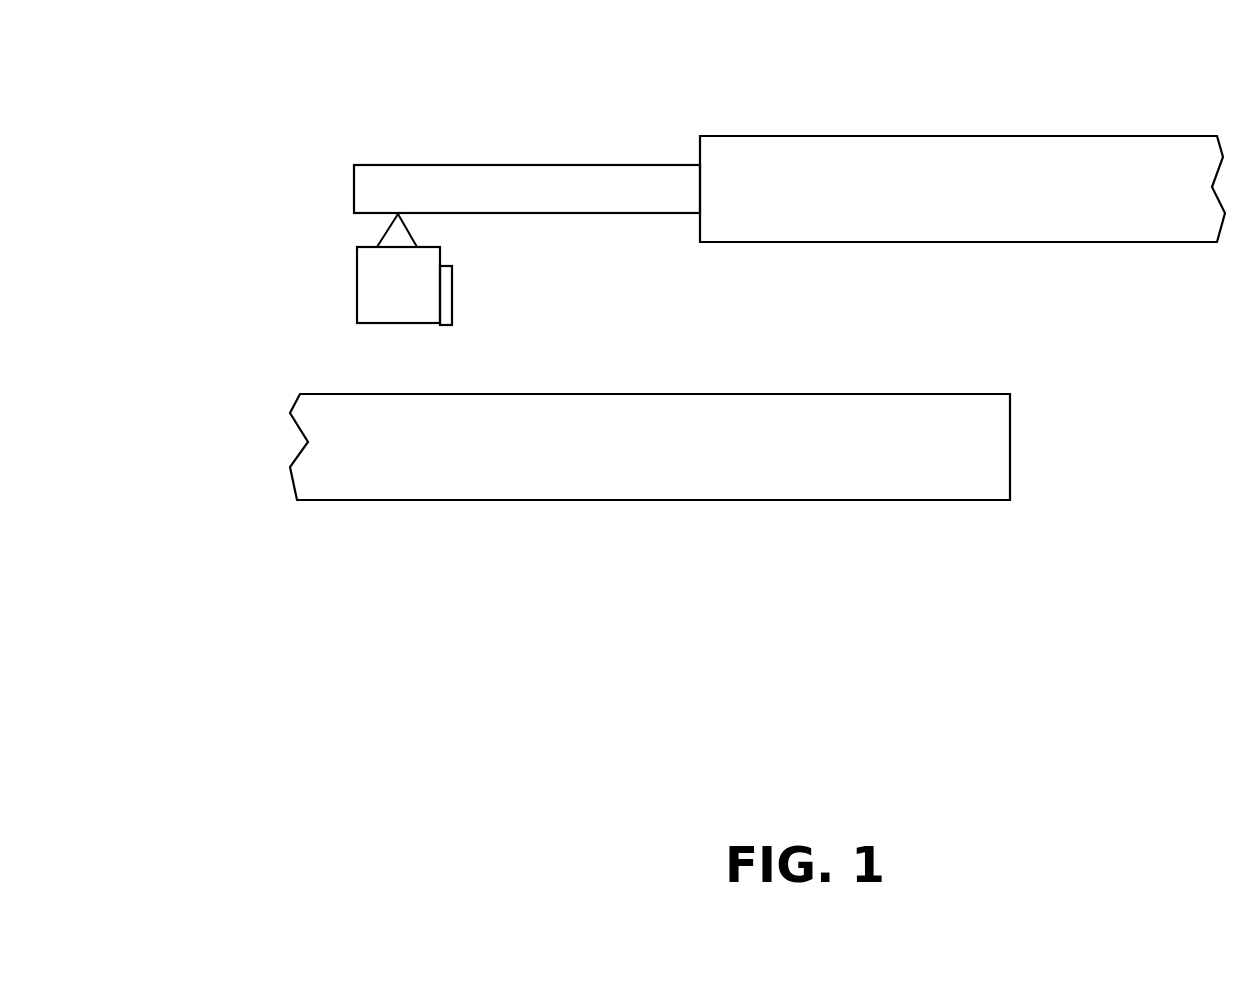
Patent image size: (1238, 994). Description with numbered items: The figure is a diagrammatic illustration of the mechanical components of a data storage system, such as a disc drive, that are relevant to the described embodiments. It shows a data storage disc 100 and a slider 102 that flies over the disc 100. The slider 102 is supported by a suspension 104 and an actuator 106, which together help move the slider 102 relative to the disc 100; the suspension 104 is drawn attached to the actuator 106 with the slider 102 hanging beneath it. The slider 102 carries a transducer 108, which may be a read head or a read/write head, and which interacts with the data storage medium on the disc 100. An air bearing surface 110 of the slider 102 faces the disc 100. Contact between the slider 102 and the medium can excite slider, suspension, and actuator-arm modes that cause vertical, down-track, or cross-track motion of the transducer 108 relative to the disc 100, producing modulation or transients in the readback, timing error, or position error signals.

The data storage disc 100 is at (976, 482).
The slider 102 is at (336, 282).
The suspension 104 is at (540, 166).
The actuator 106 is at (970, 136).
The transducer 108 is at (452, 294).
The air bearing surface 110 is at (403, 325).